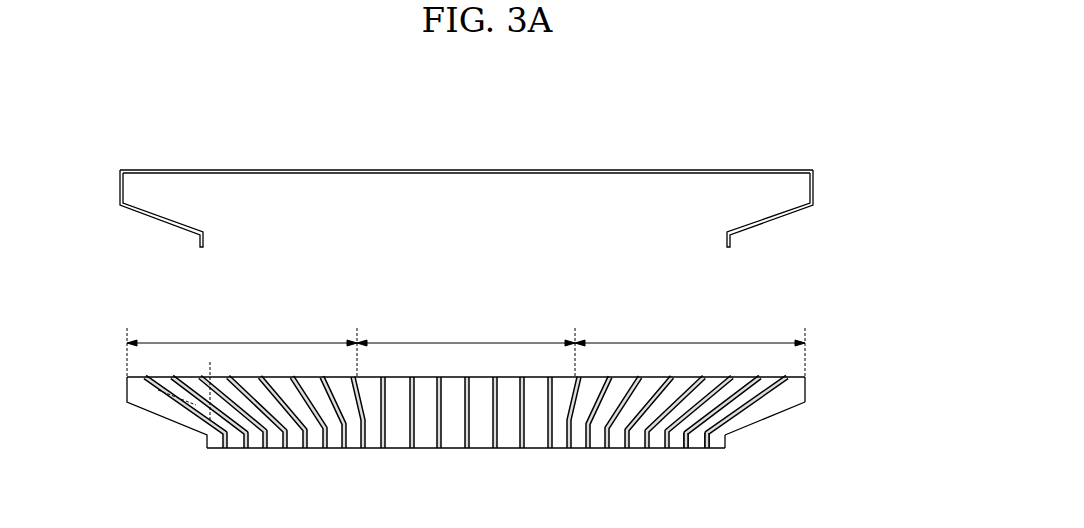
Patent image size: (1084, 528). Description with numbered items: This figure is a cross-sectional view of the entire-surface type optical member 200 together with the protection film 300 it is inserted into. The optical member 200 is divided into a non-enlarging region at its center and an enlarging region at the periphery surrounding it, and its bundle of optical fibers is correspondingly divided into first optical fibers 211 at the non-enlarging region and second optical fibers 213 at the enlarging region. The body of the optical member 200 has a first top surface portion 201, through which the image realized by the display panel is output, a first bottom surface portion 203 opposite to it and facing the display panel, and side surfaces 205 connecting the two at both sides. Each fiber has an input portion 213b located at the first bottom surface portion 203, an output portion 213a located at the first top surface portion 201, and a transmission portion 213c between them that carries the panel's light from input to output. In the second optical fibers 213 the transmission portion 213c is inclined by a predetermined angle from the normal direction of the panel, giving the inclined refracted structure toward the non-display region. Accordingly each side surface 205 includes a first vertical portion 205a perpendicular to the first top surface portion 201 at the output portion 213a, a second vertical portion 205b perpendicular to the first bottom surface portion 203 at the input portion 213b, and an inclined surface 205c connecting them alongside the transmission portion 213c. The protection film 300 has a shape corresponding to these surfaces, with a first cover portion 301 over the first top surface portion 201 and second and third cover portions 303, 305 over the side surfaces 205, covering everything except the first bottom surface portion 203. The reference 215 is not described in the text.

The protection film 300 is at (470, 167).
The first cover portion 301 is at (468, 168).
The second cover portion 303 is at (120, 187).
The third cover portion 305 is at (813, 182).
The entire-surface type optical member 200 is at (806, 298).
The first top surface portion 201 is at (774, 374).
The first bottom surface portion 203 is at (580, 449).
The side surface 205 is at (827, 426).
The first vertical portion 205a is at (808, 380).
The second vertical portion 205b is at (769, 455).
The inclined surface 205c is at (765, 420).
The first optical fiber 211 is at (453, 449).
The second optical fiber 213 is at (275, 449).
The output portion 213a is at (746, 383).
The input portion 213b is at (678, 447).
The transmission portion 213c is at (718, 447).
The vertical heat dissipation fin 215 is at (383, 449).